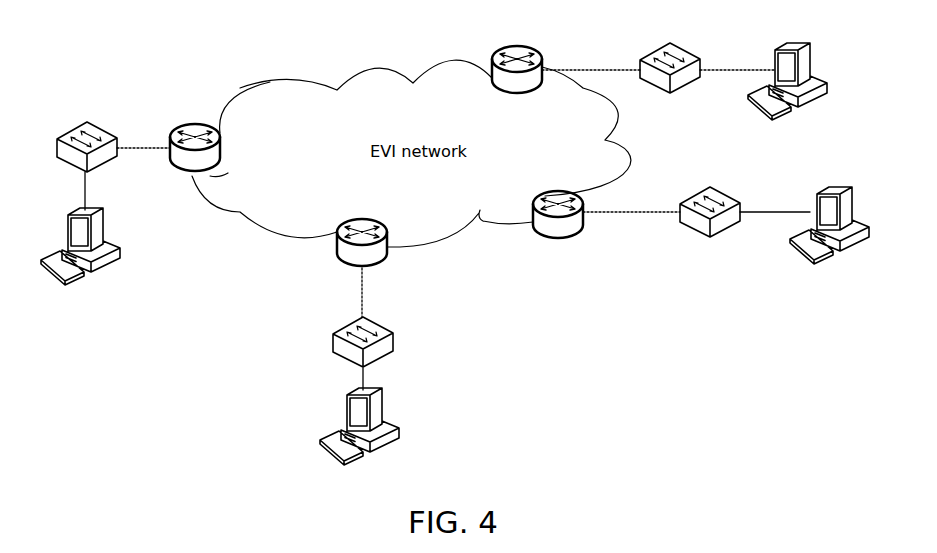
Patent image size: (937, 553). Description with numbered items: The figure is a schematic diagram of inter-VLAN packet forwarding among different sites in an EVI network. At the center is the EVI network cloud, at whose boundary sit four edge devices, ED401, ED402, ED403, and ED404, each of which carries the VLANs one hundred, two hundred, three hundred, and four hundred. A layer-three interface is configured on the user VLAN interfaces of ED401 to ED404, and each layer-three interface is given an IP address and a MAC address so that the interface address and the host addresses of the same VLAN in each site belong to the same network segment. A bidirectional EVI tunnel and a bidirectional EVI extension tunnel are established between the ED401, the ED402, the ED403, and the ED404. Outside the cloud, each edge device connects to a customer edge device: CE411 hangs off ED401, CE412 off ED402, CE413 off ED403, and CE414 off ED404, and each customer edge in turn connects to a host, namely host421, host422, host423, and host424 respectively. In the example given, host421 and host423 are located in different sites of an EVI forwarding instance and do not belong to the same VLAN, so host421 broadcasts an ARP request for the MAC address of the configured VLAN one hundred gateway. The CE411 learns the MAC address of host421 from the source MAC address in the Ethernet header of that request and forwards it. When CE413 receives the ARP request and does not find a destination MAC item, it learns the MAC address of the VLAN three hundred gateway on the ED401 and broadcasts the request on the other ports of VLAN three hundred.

The edge device ED401 is at (220, 142).
The edge device ED402 is at (360, 237).
The edge device ED403 is at (525, 64).
The edge device ED404 is at (559, 206).
The customer edge CE411 is at (87, 160).
The customer edge switch CE412 is at (363, 354).
The customer edge CE413 is at (670, 82).
The customer edge switch CE414 is at (710, 225).
The host host421 is at (80, 260).
The element host422 is at (359, 440).
The host host423 is at (787, 95).
The element host424 is at (829, 239).